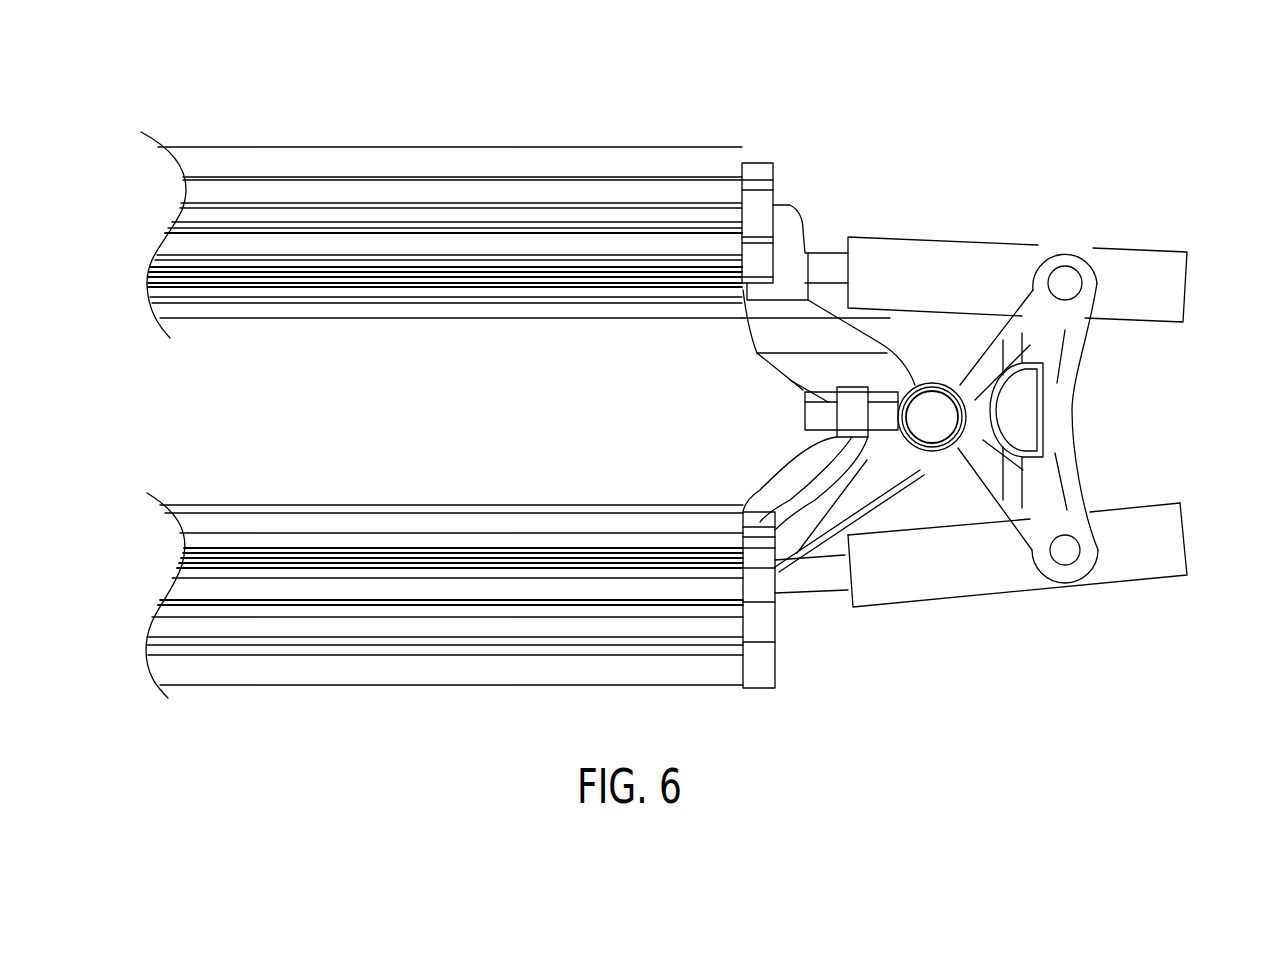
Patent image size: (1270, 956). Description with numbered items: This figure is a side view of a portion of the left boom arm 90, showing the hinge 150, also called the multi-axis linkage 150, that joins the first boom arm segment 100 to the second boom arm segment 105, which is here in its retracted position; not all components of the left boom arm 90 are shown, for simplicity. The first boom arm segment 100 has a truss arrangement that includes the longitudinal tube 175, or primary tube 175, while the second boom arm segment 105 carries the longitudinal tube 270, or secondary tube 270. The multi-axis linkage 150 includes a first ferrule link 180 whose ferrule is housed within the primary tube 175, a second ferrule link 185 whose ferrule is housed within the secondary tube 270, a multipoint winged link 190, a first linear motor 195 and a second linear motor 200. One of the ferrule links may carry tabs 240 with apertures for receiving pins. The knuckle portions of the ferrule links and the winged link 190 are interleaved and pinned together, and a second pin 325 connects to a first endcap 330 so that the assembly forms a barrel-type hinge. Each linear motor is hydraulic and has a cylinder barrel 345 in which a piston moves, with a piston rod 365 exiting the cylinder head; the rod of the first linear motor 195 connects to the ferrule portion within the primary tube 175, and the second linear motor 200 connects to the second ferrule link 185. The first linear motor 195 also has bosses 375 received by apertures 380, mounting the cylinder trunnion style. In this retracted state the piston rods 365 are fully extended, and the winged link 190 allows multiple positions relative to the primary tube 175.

The left boom arm 90 is at (441, 200).
The second boom arm segment 105 is at (513, 150).
The longitudinal tube (secondary tube) 270 is at (640, 177).
The second ferrule link 185 is at (762, 207).
The hinge (multi-axis linkage) 150 is at (905, 210).
The second linear motor 200 is at (1133, 258).
The first endcap 330 is at (932, 407).
The multipoint winged link 190 is at (1059, 450).
The apertures 380 is at (1075, 538).
The bosses (connection point) 375 is at (1067, 552).
The cylinder barrel 345 is at (1158, 517).
The first linear motor 195 is at (1054, 565).
The tabs 240 is at (767, 487).
The second pin 325 is at (925, 475).
The piston rod 365 is at (817, 583).
The first ferrule link 180 is at (767, 642).
The first boom arm segment 100 is at (444, 621).
The longitudinal tube (primary tube) 175 is at (538, 627).